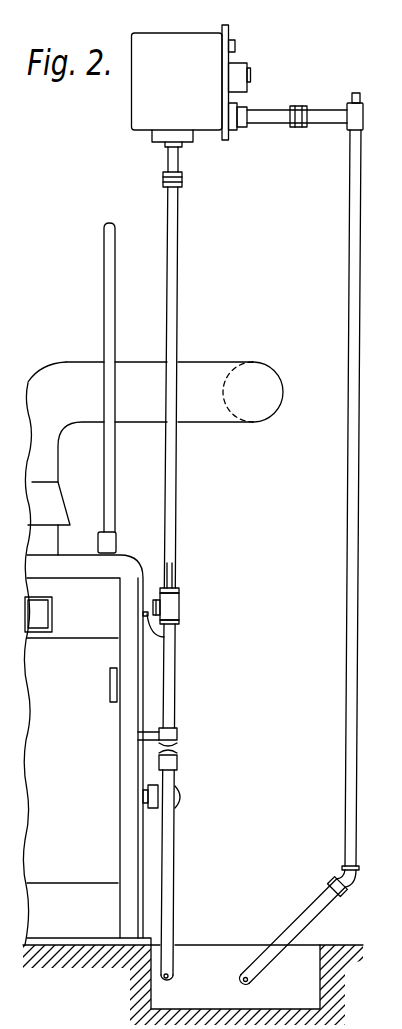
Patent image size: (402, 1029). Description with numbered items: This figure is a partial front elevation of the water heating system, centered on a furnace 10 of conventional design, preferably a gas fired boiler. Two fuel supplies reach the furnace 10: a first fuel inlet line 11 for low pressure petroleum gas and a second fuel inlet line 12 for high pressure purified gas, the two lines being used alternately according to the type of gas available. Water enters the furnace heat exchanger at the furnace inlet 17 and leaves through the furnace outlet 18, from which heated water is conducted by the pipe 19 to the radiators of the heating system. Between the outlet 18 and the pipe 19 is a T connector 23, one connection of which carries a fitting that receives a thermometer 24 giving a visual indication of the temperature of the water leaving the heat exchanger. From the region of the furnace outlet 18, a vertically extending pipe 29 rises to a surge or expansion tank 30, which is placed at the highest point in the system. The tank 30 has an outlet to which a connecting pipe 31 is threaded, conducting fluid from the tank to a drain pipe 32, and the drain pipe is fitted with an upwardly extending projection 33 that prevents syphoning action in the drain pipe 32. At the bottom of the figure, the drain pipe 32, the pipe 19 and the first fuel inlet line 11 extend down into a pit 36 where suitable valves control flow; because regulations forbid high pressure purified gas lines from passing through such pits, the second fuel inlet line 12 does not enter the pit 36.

The furnace 10 is at (153, 653).
The first fuel inlet line 11 is at (173, 865).
The second fuel inlet line 12 is at (108, 297).
The furnace inlet 17 is at (143, 808).
The furnace outlet 18 is at (176, 637).
The pipe 19 is at (170, 665).
The T connector 23 is at (177, 607).
The thermometer 24 is at (172, 578).
The vertically extending pipe 29 is at (175, 297).
The expansion tank 30 is at (124, 118).
The connecting pipe 31 is at (320, 120).
The drain pipe 32 is at (352, 231).
The upwardly extending projection 33 is at (351, 97).
The pit 36 is at (212, 968).